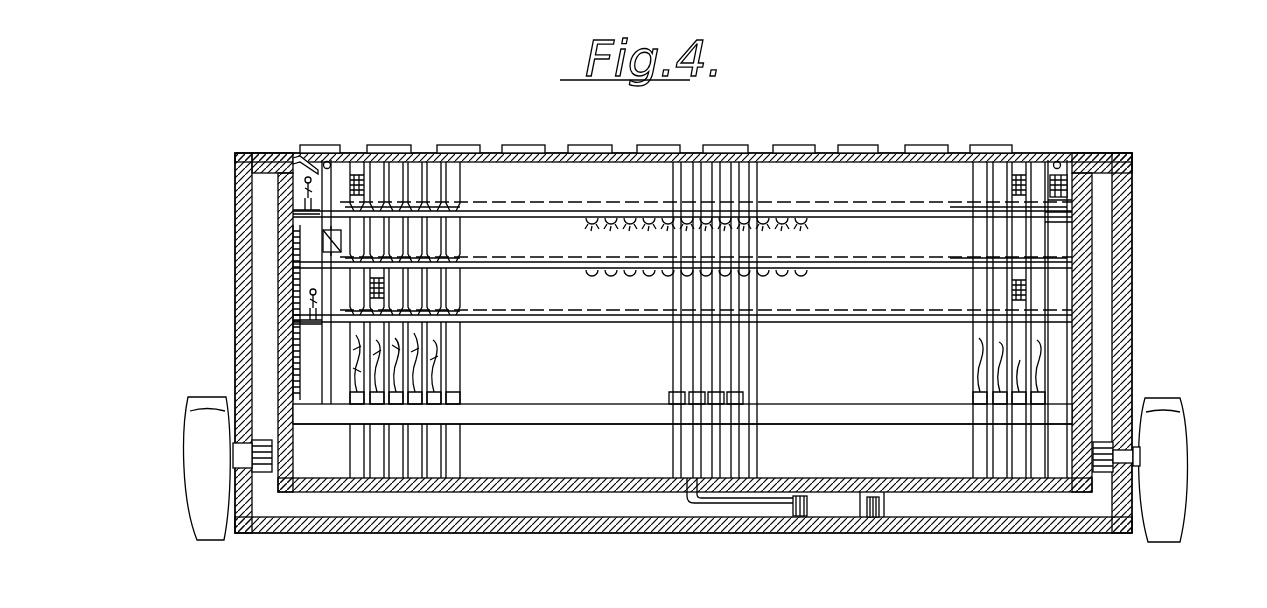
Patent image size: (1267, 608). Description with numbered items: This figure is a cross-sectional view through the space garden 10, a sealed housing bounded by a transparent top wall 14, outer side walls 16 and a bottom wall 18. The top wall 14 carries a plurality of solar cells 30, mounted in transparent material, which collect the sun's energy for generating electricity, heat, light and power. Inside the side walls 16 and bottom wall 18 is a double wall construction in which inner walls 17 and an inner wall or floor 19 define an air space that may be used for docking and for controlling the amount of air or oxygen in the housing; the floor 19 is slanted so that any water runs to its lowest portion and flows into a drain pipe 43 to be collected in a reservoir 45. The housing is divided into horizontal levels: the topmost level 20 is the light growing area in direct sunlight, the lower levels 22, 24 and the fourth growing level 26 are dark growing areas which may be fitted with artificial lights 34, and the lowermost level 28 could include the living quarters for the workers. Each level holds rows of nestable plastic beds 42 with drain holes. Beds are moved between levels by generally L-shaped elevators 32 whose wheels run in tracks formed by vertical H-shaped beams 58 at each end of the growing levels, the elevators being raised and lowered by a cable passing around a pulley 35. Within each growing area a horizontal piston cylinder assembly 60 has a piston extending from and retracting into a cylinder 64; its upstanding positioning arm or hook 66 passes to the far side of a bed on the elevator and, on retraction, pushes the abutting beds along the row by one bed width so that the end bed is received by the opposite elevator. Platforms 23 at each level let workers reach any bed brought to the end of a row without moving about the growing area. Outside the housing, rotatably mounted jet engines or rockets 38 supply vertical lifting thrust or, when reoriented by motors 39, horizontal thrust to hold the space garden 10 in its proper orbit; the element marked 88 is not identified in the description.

The space garden 10 is at (1060, 140).
The top wall 14 is at (840, 150).
The side walls 16 is at (236, 337).
The inner walls 17 is at (1080, 253).
The bottom wall 18 is at (805, 533).
The inner wall or floor 19 is at (633, 497).
The topmost level 20 is at (927, 197).
The lower level 22 is at (924, 252).
The platforms 23 is at (282, 232).
The lower level 24 is at (924, 309).
The fourth growing level 26 is at (922, 384).
The lowermost level 28 is at (919, 464).
The solar cells 30 is at (978, 145).
The elevator 32 is at (320, 245).
The artificial lights 34 is at (658, 216).
The pulley 35 is at (338, 153).
The jet engines or rockets 38 is at (1163, 438).
The motors 39 is at (266, 472).
The bed 42 is at (430, 203).
The drain pipe 43 is at (727, 510).
The reservoir 45 is at (853, 511).
The vertical H-shaped beams 58 is at (322, 360).
The piston cylinder assembly 60 is at (760, 373).
The cylinder 64 is at (437, 326).
The positioning arm or hook 66 is at (1062, 221).
The wheel 88 is at (200, 447).